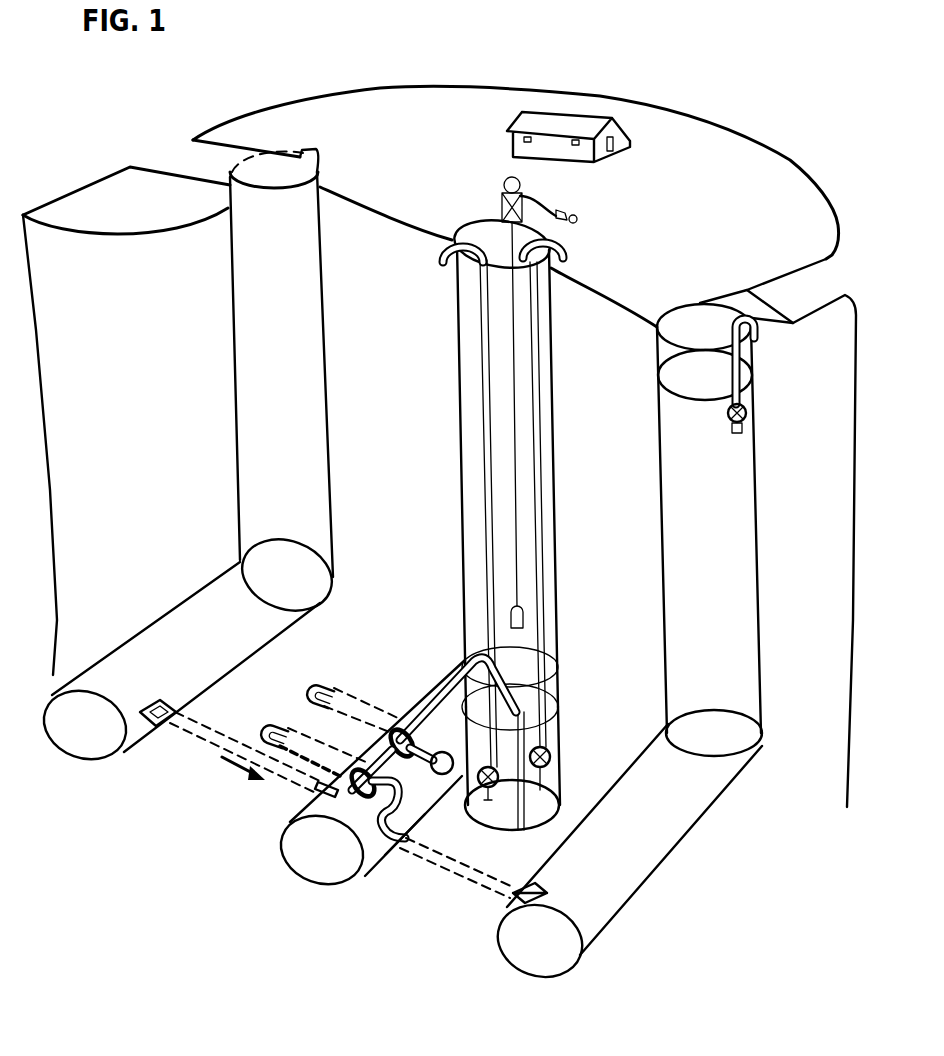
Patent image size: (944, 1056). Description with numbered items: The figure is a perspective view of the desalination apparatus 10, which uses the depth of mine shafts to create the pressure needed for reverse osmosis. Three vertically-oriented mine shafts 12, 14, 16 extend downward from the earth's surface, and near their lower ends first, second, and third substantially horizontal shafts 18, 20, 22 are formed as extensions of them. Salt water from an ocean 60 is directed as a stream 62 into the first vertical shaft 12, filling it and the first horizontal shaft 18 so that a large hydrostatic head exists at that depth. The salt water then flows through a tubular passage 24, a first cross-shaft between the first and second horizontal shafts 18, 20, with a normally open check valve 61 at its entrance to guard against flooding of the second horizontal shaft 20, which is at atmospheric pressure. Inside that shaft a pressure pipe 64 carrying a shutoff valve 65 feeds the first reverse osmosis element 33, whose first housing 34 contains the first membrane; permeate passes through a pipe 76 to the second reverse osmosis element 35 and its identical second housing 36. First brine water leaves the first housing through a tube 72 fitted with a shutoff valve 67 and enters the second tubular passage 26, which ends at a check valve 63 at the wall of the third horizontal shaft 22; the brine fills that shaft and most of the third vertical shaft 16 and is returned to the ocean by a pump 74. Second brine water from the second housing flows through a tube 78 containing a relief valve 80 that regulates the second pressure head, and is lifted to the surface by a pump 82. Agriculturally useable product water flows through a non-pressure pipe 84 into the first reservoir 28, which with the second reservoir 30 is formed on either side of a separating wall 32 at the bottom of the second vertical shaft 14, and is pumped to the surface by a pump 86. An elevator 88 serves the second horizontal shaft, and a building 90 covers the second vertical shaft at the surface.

The apparatus 10 is at (200, 410).
The first vertically-oriented mine shaft 12 is at (326, 345).
The second vertically-oriented mine shaft 14 is at (552, 409).
The third vertically-oriented mine shaft 16 is at (759, 413).
The first horizontal shaft 18 is at (126, 628).
The second horizontal shaft 20 is at (300, 817).
The third horizontal shaft 22 is at (504, 902).
The tubular passage 24 is at (198, 736).
The second tubular passage 26 is at (452, 866).
The first reservoir 28 is at (479, 798).
The second reservoir 30 is at (546, 796).
The separating wall 32 is at (524, 826).
The reverse osmosis element 33 is at (256, 718).
The first housing 34 is at (282, 718).
The reverse osmosis element 35 is at (306, 682).
The second housing 36 is at (326, 680).
The ocean 60 is at (134, 138).
The check valve 61 is at (150, 735).
The stream 62 is at (246, 150).
The check valve 63 is at (547, 890).
The pipe 64 is at (322, 850).
The shutoff valve 65 is at (314, 792).
The shutoff valve 67 is at (410, 836).
The tube 72 is at (382, 806).
The pump 74 is at (750, 421).
The pipe 76 is at (388, 755).
The tube 78 is at (385, 783).
The relief valve 80 is at (452, 752).
The pump 82 is at (552, 757).
The pipe 84 is at (436, 684).
The pump 86 is at (490, 808).
The elevator 88 is at (527, 617).
The building 90 is at (586, 101).